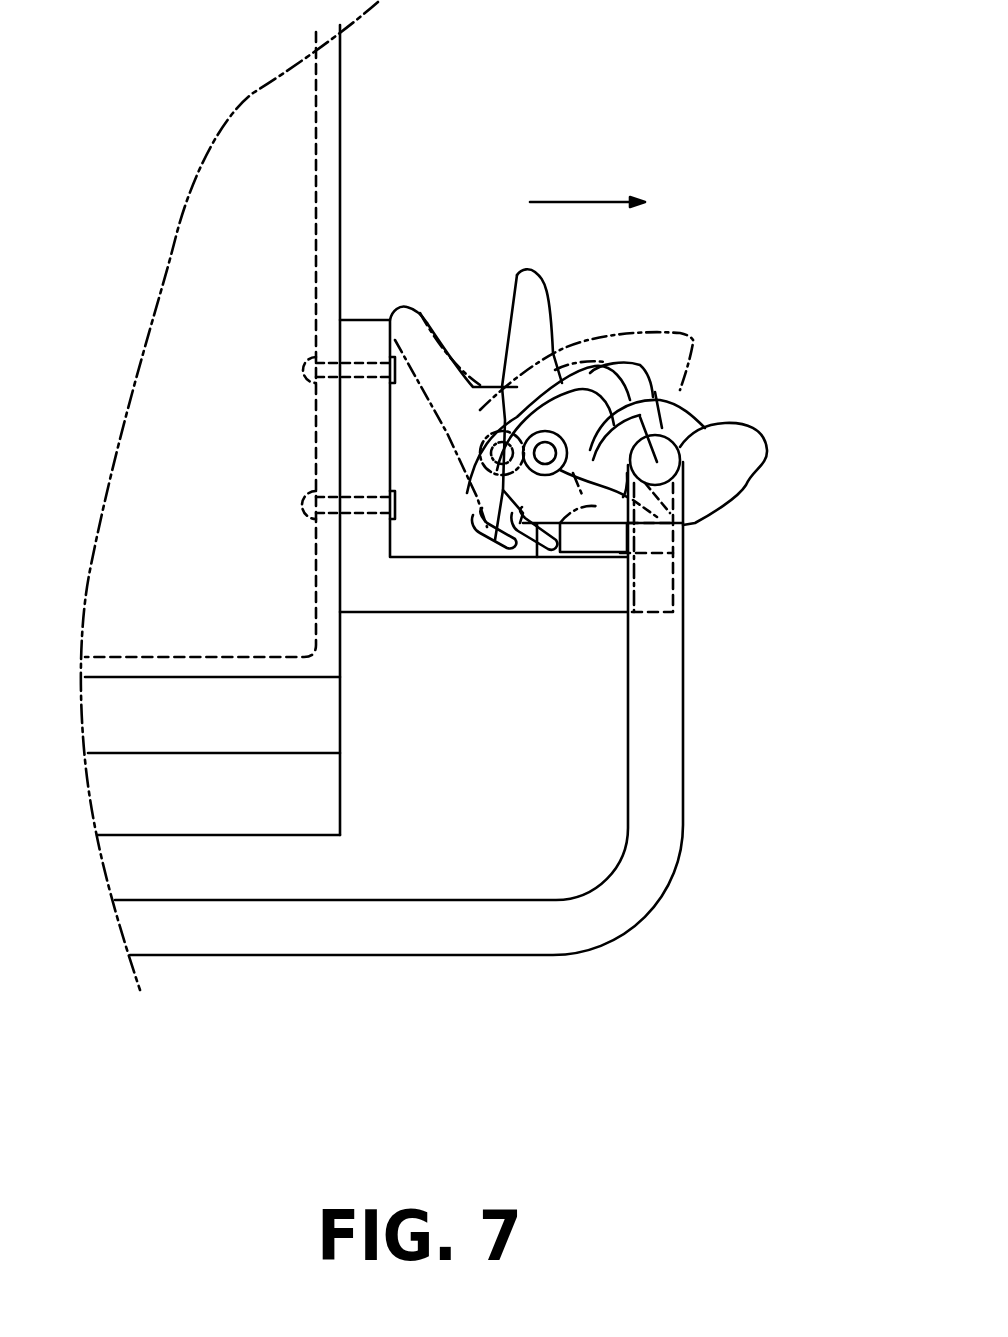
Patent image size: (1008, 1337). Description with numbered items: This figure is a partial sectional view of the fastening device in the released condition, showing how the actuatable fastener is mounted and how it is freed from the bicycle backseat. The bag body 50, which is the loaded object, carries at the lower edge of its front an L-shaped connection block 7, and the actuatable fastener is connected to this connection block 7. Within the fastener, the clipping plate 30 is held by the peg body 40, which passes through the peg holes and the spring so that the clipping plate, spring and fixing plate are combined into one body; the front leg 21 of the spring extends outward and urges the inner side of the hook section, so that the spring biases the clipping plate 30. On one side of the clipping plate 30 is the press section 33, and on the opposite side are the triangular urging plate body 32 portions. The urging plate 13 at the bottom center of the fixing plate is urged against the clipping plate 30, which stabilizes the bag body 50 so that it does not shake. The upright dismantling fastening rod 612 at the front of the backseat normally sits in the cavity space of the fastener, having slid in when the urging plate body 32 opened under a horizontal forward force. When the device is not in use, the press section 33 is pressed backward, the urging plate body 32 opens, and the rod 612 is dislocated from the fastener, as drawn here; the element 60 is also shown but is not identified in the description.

The bag body 50 is at (248, 213).
The L-shaped connection block 7 is at (363, 322).
The press section 33 is at (531, 296).
The clipping plate 30 is at (590, 373).
The urging plate 13 is at (643, 400).
The dismantling fastening rod 612 is at (657, 462).
The urging plate body 32 is at (708, 487).
The peg body 40 is at (495, 540).
The front leg 21 is at (527, 557).
The housing 60 is at (660, 795).